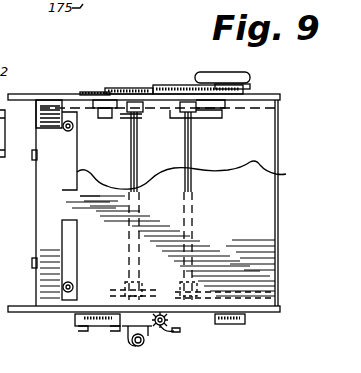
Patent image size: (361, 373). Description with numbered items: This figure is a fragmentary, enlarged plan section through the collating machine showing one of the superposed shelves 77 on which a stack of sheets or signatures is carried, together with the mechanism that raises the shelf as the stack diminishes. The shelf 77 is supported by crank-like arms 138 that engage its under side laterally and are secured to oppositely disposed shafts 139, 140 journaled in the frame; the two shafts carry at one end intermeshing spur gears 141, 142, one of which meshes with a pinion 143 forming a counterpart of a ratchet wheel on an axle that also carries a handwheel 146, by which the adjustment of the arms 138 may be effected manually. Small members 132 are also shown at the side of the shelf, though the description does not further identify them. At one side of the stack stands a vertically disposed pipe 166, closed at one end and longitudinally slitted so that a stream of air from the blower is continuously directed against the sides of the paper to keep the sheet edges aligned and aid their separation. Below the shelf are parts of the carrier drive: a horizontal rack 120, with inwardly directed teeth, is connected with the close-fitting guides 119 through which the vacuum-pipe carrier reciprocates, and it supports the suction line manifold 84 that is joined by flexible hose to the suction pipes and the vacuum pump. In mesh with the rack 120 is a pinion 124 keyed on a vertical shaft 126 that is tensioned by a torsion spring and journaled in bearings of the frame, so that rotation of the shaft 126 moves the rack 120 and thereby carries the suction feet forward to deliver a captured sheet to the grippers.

The shelf 77 is at (274, 242).
The guide bracket 132 is at (34, 157).
The spur gear 142 is at (118, 88).
The spur gear 141 is at (162, 88).
The handwheel 146 is at (220, 68).
The pinion 143 is at (235, 87).
The shaft 140 is at (132, 157).
The shaft 139 is at (194, 153).
The arm 138 is at (118, 116).
The pipe 166 is at (70, 132).
The guide 119 is at (80, 325).
The pinion 124 is at (162, 316).
The vertical shaft 126 is at (170, 324).
The horizontal rack 120 is at (181, 334).
The suction line manifold 84 is at (143, 341).